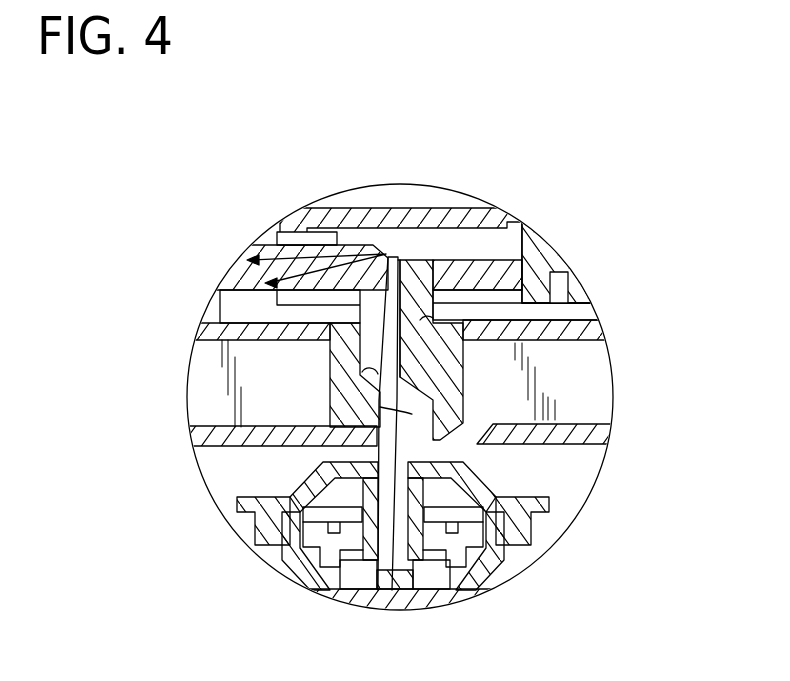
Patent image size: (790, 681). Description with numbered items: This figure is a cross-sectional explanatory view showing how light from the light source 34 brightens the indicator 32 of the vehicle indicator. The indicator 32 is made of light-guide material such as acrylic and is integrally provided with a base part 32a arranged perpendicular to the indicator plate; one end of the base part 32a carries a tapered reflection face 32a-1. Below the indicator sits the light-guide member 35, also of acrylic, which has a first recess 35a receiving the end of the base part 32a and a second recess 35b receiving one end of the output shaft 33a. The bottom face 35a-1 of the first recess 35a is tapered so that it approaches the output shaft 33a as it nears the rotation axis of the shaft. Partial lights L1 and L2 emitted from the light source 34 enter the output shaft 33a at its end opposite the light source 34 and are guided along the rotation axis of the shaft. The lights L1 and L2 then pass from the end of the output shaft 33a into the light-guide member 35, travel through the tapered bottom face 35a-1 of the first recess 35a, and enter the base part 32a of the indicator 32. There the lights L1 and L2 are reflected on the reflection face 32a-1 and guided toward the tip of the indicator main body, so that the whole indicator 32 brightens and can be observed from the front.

The indicator 32 is at (338, 244).
The base part 32a is at (417, 343).
The tapered reflection face 32a-1 is at (416, 222).
The output shaft 33a is at (490, 466).
The light source 34 is at (402, 582).
The light-guide member 35 is at (465, 392).
The first recess 35a is at (425, 308).
The bottom face 35a-1 is at (480, 207).
The second recess 35b is at (410, 418).
The partial light L1 is at (386, 252).
The partial light L2 is at (380, 407).